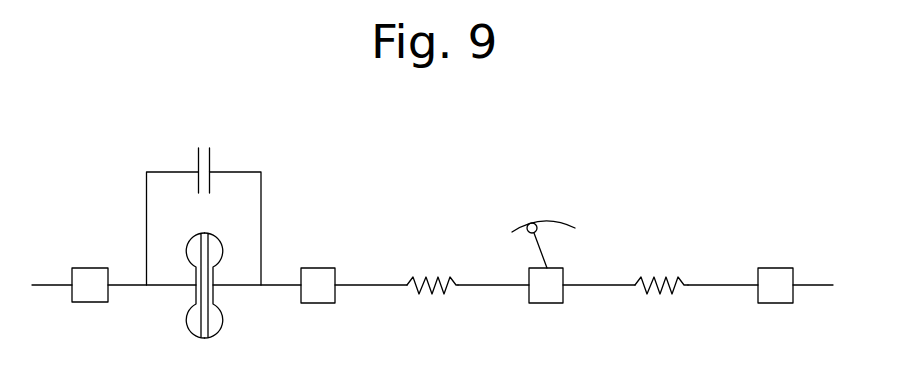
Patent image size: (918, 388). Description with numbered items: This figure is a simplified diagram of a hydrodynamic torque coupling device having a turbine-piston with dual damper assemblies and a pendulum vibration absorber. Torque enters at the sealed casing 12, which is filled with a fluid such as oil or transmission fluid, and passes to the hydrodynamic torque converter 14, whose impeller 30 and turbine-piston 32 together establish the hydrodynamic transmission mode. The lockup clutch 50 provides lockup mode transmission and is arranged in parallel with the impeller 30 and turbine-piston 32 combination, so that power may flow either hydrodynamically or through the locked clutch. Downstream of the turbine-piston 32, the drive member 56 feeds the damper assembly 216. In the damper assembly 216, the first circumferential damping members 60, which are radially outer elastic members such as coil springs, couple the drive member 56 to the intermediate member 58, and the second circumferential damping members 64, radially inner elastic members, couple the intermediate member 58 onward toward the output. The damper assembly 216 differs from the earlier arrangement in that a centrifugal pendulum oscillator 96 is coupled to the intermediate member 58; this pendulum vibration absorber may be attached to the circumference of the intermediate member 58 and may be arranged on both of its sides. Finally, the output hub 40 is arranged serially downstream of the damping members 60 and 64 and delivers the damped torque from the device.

The sealed casing 12 is at (90, 275).
The hydrodynamic torque converter 14 is at (178, 264).
The impeller 30 is at (187, 324).
The turbine-piston 32 is at (222, 324).
The lockup clutch 50 is at (226, 152).
The drive member 56 is at (322, 272).
The intermediate member 58 is at (547, 295).
The first circumferential damping members 60 is at (425, 297).
The second circumferential damping members 64 is at (653, 297).
The centrifugal pendulum oscillator 96 is at (563, 212).
The damper assembly 216 is at (613, 256).
The output hub 40 is at (775, 275).